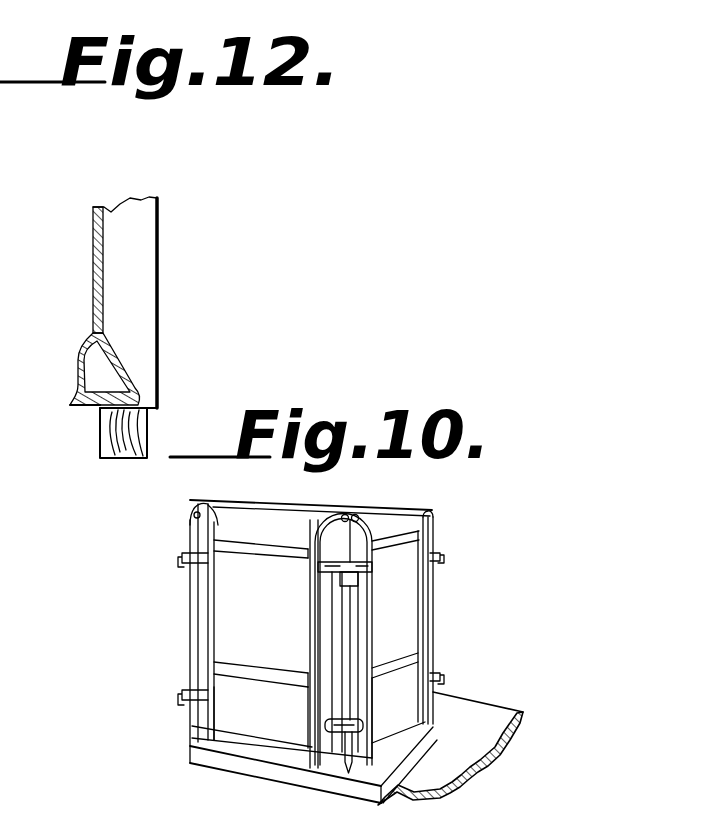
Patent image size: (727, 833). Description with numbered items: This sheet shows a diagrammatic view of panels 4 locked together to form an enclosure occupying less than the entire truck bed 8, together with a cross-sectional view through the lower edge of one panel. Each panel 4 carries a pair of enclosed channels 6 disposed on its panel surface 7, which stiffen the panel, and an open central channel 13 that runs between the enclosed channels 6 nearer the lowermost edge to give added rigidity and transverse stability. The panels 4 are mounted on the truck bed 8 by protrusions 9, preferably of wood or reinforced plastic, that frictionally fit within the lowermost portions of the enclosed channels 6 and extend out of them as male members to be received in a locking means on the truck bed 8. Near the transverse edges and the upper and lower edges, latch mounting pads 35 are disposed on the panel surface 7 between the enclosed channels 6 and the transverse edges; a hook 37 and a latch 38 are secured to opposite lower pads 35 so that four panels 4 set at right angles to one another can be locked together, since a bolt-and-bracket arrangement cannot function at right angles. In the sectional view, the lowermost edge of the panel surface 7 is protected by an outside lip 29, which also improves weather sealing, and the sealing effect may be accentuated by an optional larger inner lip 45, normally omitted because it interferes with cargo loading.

In FIG. 12, the enclosed channel 6 is at (157, 222).
In FIG. 10, the enclosed channel 6 is at (218, 587).
In FIG. 12, the panel surface 7 is at (103, 289).
In FIG. 12, the outside lip 29 is at (113, 345).
In FIG. 12, the inner lip 45 is at (72, 398).
In FIG. 12, the protrusion 9 is at (110, 458).
In FIG. 10, the panel 4 is at (278, 633).
In FIG. 10, the latch mounting pad 35 is at (320, 568).
In FIG. 10, the central channel 13 is at (250, 676).
In FIG. 10, the latch 38 is at (344, 738).
In FIG. 10, the hook 37 is at (352, 735).
In FIG. 10, the truck bed 8 is at (227, 757).